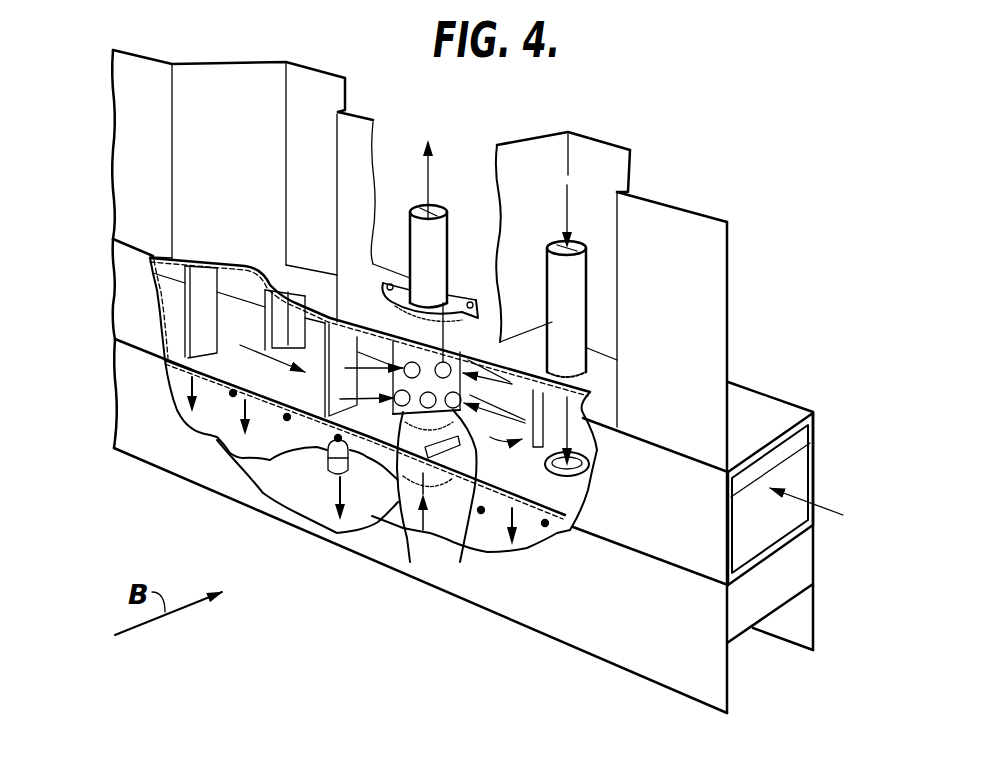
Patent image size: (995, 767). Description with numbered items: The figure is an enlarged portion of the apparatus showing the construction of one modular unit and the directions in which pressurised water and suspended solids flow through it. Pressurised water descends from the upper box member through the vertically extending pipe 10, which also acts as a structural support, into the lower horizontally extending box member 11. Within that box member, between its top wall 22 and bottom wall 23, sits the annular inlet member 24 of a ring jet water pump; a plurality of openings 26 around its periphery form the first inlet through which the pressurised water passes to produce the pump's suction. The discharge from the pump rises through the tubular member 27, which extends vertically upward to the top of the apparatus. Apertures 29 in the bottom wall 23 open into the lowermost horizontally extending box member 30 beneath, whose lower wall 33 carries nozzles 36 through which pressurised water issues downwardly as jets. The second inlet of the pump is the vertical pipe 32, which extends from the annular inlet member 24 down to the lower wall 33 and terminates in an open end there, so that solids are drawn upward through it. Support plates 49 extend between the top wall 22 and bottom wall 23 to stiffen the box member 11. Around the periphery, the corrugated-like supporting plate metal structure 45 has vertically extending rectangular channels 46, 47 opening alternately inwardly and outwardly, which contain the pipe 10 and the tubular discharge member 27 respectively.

The vertically extending pipe 10 is at (586, 276).
The lower horizontally extending box member 11 is at (786, 413).
The top wall 22 is at (298, 262).
The bottom wall 23 is at (224, 362).
The annular inlet member 24 is at (372, 512).
The opening 26 is at (441, 300).
The tubular member 27 is at (447, 198).
The aperture 29 is at (589, 471).
The lowermost horizontally extending box member 30 is at (814, 566).
The vertical pipe 32 is at (405, 562).
The lower wall 33 is at (237, 467).
The nozzle 36 is at (333, 420).
The supporting plate metal structure 45 is at (224, 85).
The channel 46 is at (597, 157).
The channel 47 is at (400, 148).
The support plate 49 is at (268, 290).